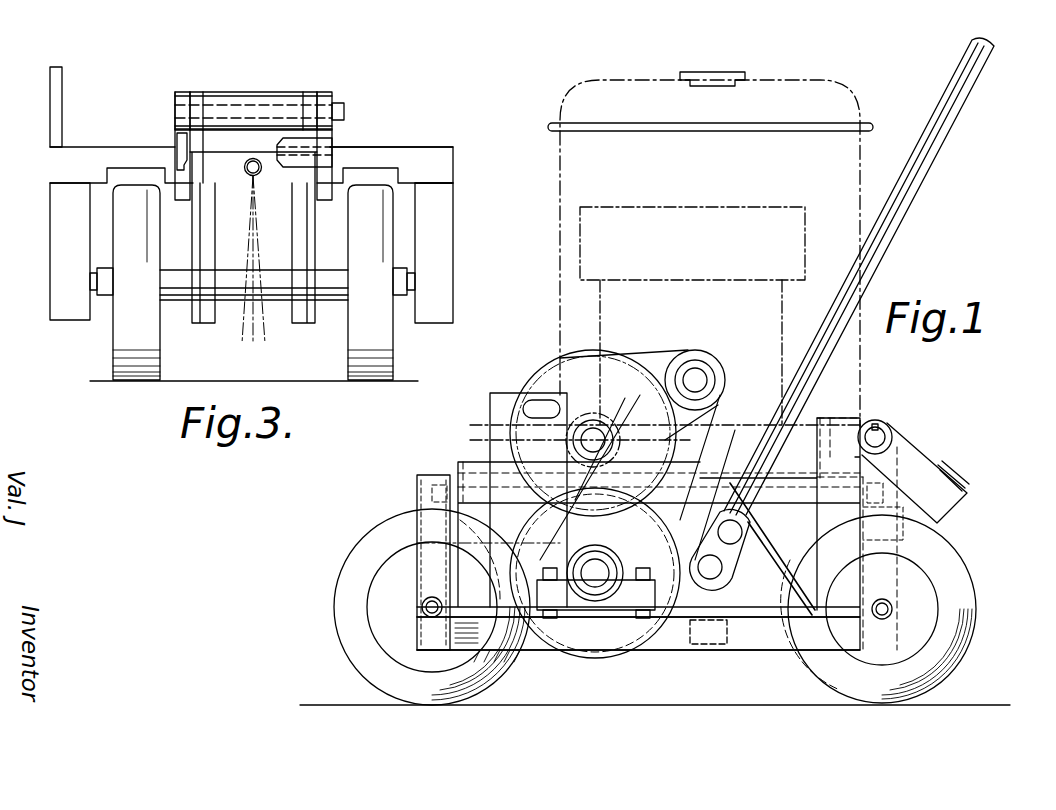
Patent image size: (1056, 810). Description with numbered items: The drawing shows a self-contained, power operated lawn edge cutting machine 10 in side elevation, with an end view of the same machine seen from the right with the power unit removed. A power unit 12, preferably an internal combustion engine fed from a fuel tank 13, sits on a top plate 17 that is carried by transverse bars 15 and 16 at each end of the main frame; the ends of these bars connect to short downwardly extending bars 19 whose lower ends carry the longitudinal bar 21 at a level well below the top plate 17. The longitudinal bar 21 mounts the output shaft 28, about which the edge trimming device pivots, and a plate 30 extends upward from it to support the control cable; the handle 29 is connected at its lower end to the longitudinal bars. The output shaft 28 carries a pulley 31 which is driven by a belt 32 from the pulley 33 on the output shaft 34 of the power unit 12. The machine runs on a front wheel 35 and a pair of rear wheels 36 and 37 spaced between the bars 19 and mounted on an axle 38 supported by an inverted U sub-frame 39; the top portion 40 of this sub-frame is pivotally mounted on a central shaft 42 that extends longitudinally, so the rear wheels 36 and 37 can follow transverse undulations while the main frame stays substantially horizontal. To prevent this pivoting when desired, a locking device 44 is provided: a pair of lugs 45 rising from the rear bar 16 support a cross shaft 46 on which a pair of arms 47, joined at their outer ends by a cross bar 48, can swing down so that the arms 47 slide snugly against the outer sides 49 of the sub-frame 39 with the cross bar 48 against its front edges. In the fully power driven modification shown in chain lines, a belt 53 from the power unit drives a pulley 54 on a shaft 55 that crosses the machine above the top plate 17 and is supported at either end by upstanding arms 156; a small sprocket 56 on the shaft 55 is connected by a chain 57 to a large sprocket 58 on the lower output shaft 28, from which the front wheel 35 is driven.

In FIG. 1, the cutting machine 10 is at (913, 240).
In FIG. 1, the power unit 12 is at (798, 210).
In FIG. 1, the tank 13 is at (798, 85).
In FIG. 1, the transverse bar 15 is at (470, 478).
In FIG. 3, the transverse bar 16 is at (441, 147).
In FIG. 1, the transverse bar 16 is at (922, 472).
In FIG. 1, the top plate 17 is at (803, 468).
In FIG. 3, the downwardly extending bars 19 is at (78, 318).
In FIG. 1, the downwardly extending bars 19 is at (425, 522).
In FIG. 1, the longitudinal bar 21 is at (741, 651).
In FIG. 1, the output shaft 28 is at (597, 589).
In FIG. 1, the handle 29 is at (960, 66).
In FIG. 3, the plate 30 is at (60, 127).
In FIG. 1, the plate 30 is at (490, 400).
In FIG. 1, the pulley 31 is at (612, 658).
In FIG. 1, the belt 32 is at (712, 480).
In FIG. 1, the pulley 33 is at (712, 381).
In FIG. 1, the output shaft 34 is at (701, 378).
In FIG. 1, the front wheel 35 is at (368, 555).
In FIG. 3, the rear wheel 36 is at (140, 381).
In FIG. 1, the rear wheel 36 is at (808, 658).
In FIG. 3, the rear wheel 37 is at (365, 381).
In FIG. 3, the axle 38 is at (176, 302).
In FIG. 1, the axle 38 is at (888, 600).
In FIG. 3, the sub-frame 39 is at (284, 315).
In FIG. 3, the top portion 40 is at (215, 150).
In FIG. 3, the central shaft 42 is at (258, 176).
In FIG. 1, the central shaft 42 is at (803, 493).
In FIG. 3, the locking device 44 is at (281, 86).
In FIG. 3, the lugs 45 is at (187, 136).
In FIG. 1, the lugs 45 is at (884, 423).
In FIG. 3, the cross shaft 46 is at (346, 110).
In FIG. 3, the arms 47 is at (336, 128).
In FIG. 1, the arms 47 is at (959, 463).
In FIG. 3, the cross bar 48 is at (327, 157).
In FIG. 1, the cross bar 48 is at (958, 482).
In FIG. 3, the outer sides 49 is at (200, 213).
In FIG. 1, the belt 53 is at (648, 347).
In FIG. 1, the pulley 54 is at (652, 350).
In FIG. 1, the shaft 55 is at (597, 448).
In FIG. 1, the small sprocket 56 is at (600, 430).
In FIG. 1, the chain 57 is at (565, 444).
In FIG. 1, the large sprocket 58 is at (706, 645).
In FIG. 1, the upstanding arms 156 is at (628, 548).